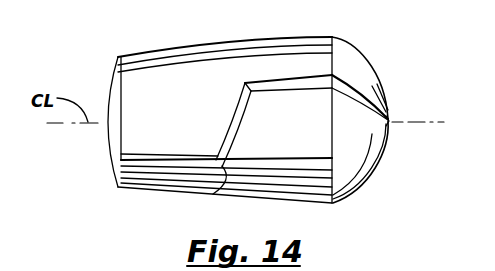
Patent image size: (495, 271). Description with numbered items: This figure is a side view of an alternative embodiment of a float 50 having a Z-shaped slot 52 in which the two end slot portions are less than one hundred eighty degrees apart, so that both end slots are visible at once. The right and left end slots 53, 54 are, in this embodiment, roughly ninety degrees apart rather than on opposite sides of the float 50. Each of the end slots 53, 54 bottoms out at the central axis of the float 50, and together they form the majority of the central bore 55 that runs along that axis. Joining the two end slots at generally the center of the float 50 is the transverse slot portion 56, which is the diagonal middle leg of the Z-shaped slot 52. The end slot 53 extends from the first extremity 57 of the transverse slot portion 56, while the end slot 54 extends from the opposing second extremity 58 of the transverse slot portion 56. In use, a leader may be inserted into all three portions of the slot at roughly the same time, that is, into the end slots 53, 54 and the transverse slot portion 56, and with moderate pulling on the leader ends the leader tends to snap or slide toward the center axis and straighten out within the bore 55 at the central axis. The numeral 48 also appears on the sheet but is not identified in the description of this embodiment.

The float 50 is at (118, 45).
The Z-shaped slot 52 is at (183, 153).
The end slot 53 is at (132, 169).
The end slot 54 is at (348, 85).
The central bore 55 is at (403, 130).
The transverse slot portion 56 is at (235, 118).
The first extremity 57 is at (214, 194).
The second extremity 58 is at (252, 88).
The cutting tool 48 is at (445, 260).